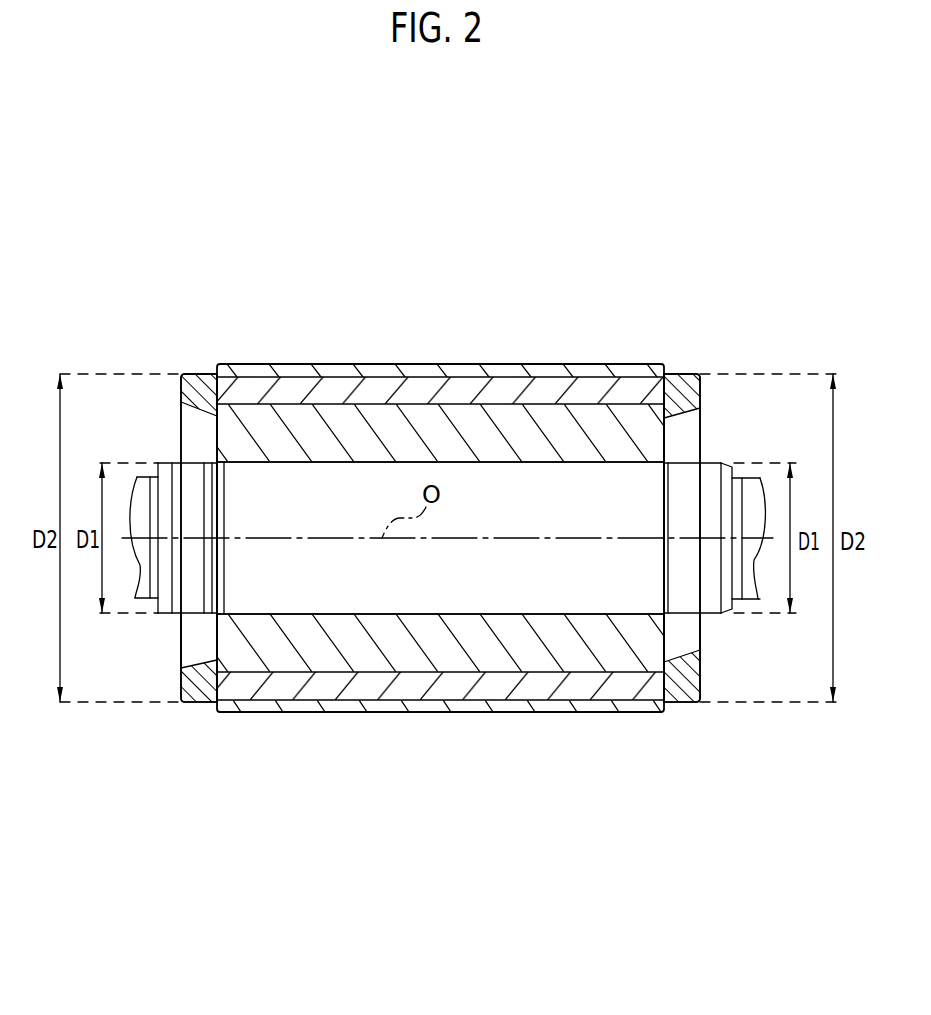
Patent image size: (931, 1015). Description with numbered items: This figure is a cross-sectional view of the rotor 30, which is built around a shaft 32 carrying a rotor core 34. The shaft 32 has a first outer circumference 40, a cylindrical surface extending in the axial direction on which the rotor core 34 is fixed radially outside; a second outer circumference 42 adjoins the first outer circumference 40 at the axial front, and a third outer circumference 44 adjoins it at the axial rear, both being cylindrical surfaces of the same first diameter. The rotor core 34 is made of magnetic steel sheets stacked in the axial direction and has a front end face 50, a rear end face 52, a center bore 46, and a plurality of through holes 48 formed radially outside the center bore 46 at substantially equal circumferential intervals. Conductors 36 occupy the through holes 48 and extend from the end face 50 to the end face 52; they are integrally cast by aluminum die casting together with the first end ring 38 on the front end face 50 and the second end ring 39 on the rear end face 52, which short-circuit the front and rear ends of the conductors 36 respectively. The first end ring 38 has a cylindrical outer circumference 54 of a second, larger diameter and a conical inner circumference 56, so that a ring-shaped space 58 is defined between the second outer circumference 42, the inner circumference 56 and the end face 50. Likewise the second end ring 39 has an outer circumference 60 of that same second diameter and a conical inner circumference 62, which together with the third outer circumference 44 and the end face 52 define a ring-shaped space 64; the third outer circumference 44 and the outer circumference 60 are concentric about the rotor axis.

The rotor 30 is at (799, 98).
The shaft 32 is at (543, 624).
The rotor core 34 is at (602, 724).
The conductors 36 is at (290, 392).
The first end ring 38 is at (156, 374).
The second end ring 39 is at (702, 392).
The first outer circumference 40 is at (500, 462).
The second outer circumference 42 is at (192, 462).
The third outer circumference 44 is at (690, 464).
The center bore 46 is at (333, 613).
The through holes 48 is at (386, 380).
The end face 50 is at (213, 637).
The end face 52 is at (667, 650).
The outer circumference 54 is at (203, 374).
The inner circumference 56 is at (198, 413).
The space 58 is at (197, 627).
The outer circumference 60 is at (682, 374).
The inner circumference 62 is at (693, 422).
The space 64 is at (682, 627).